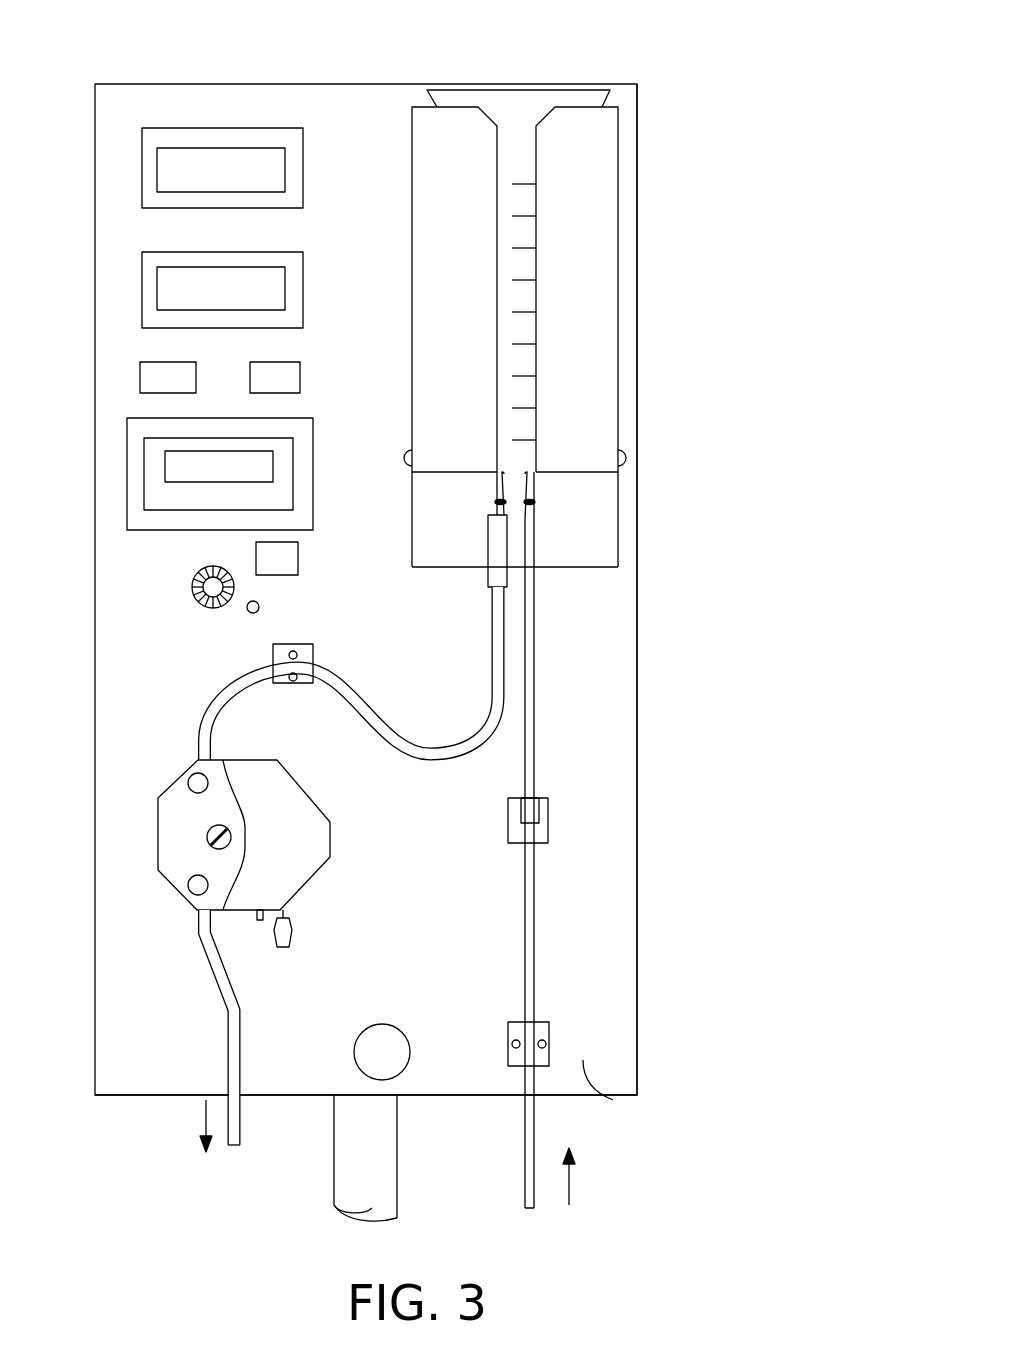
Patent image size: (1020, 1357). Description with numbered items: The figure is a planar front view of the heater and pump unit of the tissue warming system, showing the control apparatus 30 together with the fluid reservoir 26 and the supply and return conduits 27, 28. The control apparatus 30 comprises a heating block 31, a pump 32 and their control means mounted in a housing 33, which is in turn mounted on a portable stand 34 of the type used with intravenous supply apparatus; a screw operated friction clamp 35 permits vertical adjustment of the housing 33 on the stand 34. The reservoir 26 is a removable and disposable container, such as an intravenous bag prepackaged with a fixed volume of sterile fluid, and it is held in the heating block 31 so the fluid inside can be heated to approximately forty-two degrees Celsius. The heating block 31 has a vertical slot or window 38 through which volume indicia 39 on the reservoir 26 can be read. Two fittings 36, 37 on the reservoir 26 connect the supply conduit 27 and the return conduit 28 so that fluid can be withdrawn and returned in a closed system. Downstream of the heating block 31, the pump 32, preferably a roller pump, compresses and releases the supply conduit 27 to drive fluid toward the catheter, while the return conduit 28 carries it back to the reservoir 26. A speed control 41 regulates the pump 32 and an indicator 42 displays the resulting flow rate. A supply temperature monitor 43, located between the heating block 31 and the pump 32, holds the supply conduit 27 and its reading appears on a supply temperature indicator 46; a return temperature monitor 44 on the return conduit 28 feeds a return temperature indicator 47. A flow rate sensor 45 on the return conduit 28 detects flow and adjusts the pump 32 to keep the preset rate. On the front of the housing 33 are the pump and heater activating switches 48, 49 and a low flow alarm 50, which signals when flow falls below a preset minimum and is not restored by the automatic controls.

The control apparatus 30 is at (155, 62).
The fluid reservoir 26 is at (517, 118).
The heating block 31 is at (588, 275).
The volume indicia 39 is at (528, 195).
The vertical slot or window 38 is at (535, 357).
The fitting 36 is at (502, 482).
The fitting 37 is at (534, 490).
The housing 33 is at (602, 737).
The flow rate sensor 45 is at (548, 838).
The return conduit 28 is at (534, 917).
The return temperature monitor 44 is at (549, 1030).
The supply conduit 27 is at (228, 1072).
The pump 32 is at (180, 893).
The screw operated friction clamp 35 is at (405, 1068).
The portable stand 34 is at (333, 1203).
The supply temperature monitor 43 is at (273, 658).
The speed control 41 is at (192, 594).
The low flow alarm 50 is at (256, 557).
The indicator 42 is at (165, 478).
The heater activating switch 49 is at (145, 380).
The pump activating switch 48 is at (283, 378).
The supply temperature indicator 46 is at (157, 147).
The return temperature indicator 47 is at (140, 290).